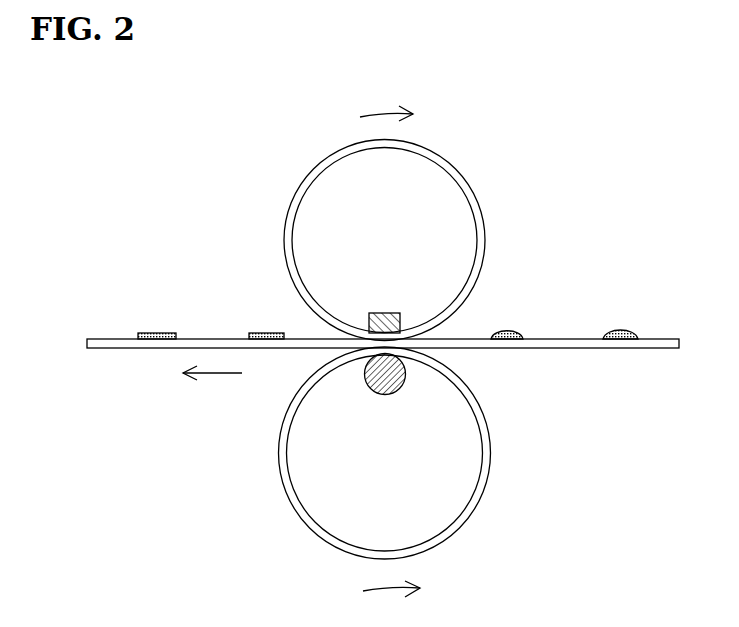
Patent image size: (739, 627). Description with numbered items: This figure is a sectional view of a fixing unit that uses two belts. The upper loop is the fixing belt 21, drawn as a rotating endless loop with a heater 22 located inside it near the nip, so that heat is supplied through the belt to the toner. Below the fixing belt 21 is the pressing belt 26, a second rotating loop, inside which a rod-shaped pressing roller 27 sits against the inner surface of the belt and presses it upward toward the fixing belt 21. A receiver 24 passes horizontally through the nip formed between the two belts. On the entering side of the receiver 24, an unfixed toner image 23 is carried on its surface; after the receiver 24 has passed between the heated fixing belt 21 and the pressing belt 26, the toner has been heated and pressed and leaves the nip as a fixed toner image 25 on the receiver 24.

The fixing belt 21 is at (445, 165).
The heater 22 is at (398, 312).
The unfixed toner image 23 is at (624, 330).
The receiver 24 is at (575, 349).
The fixed toner image 25 is at (153, 332).
The pressing belt 26 is at (478, 484).
The rod-shaped pressing roller 27 is at (370, 390).